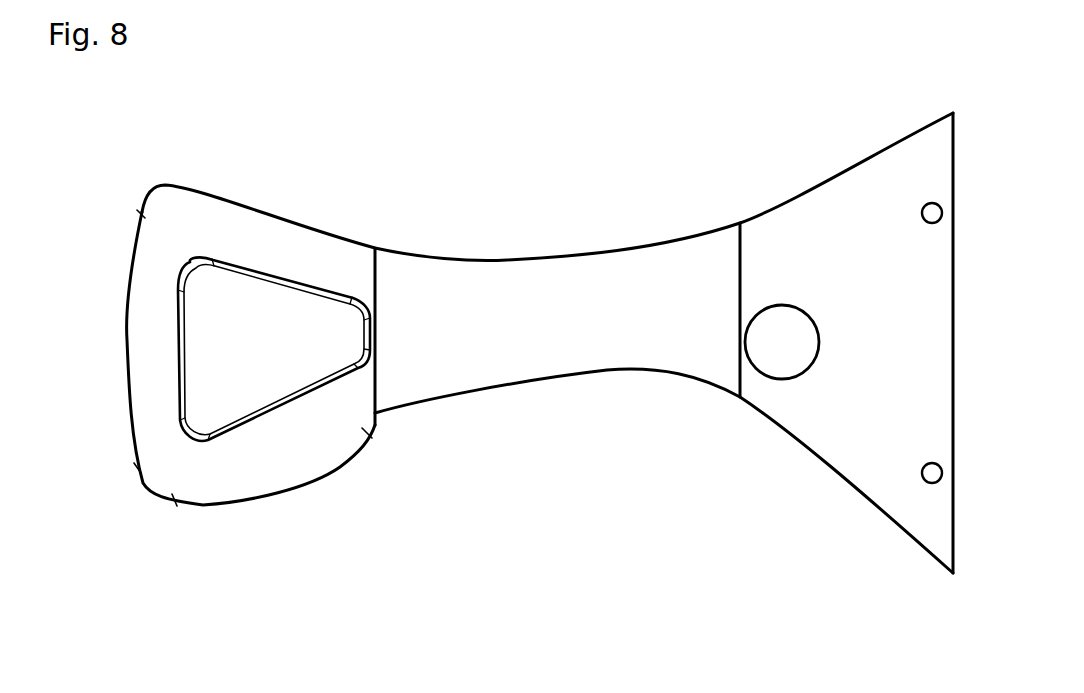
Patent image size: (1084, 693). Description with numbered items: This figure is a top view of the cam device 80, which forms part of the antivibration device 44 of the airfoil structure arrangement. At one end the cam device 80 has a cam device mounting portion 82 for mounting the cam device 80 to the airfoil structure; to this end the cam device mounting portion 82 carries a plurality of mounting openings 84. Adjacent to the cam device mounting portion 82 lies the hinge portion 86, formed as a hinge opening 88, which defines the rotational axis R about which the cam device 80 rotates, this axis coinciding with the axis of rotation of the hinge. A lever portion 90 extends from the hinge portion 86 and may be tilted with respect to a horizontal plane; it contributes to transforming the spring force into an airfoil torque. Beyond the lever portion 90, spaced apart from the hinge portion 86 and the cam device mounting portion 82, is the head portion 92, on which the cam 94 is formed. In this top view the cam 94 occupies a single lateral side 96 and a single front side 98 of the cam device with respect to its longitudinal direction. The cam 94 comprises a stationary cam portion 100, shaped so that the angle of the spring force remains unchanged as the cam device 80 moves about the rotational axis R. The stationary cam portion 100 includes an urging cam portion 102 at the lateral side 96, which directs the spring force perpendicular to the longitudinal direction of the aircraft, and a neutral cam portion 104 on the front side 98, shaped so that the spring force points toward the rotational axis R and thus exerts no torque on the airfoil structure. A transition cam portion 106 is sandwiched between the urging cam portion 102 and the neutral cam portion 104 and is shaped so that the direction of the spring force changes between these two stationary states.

The antivibration device 44 is at (462, 172).
The cam device 80 is at (560, 232).
The cam device mounting portion 82 is at (842, 174).
The mounting openings 84 is at (932, 205).
The hinge portion 86 is at (840, 316).
The hinge opening 88 is at (818, 352).
The rotational axis R is at (783, 342).
The lever portion 90 is at (645, 268).
The head portion 92 is at (330, 266).
The cam 94 is at (135, 215).
The lateral side 96 is at (230, 540).
The front side 98 is at (115, 397).
The stationary cam portion 100 is at (128, 290).
The urging cam portion 102 is at (290, 493).
The neutral cam portion 104 is at (126, 345).
The transition cam portion 106 is at (173, 510).